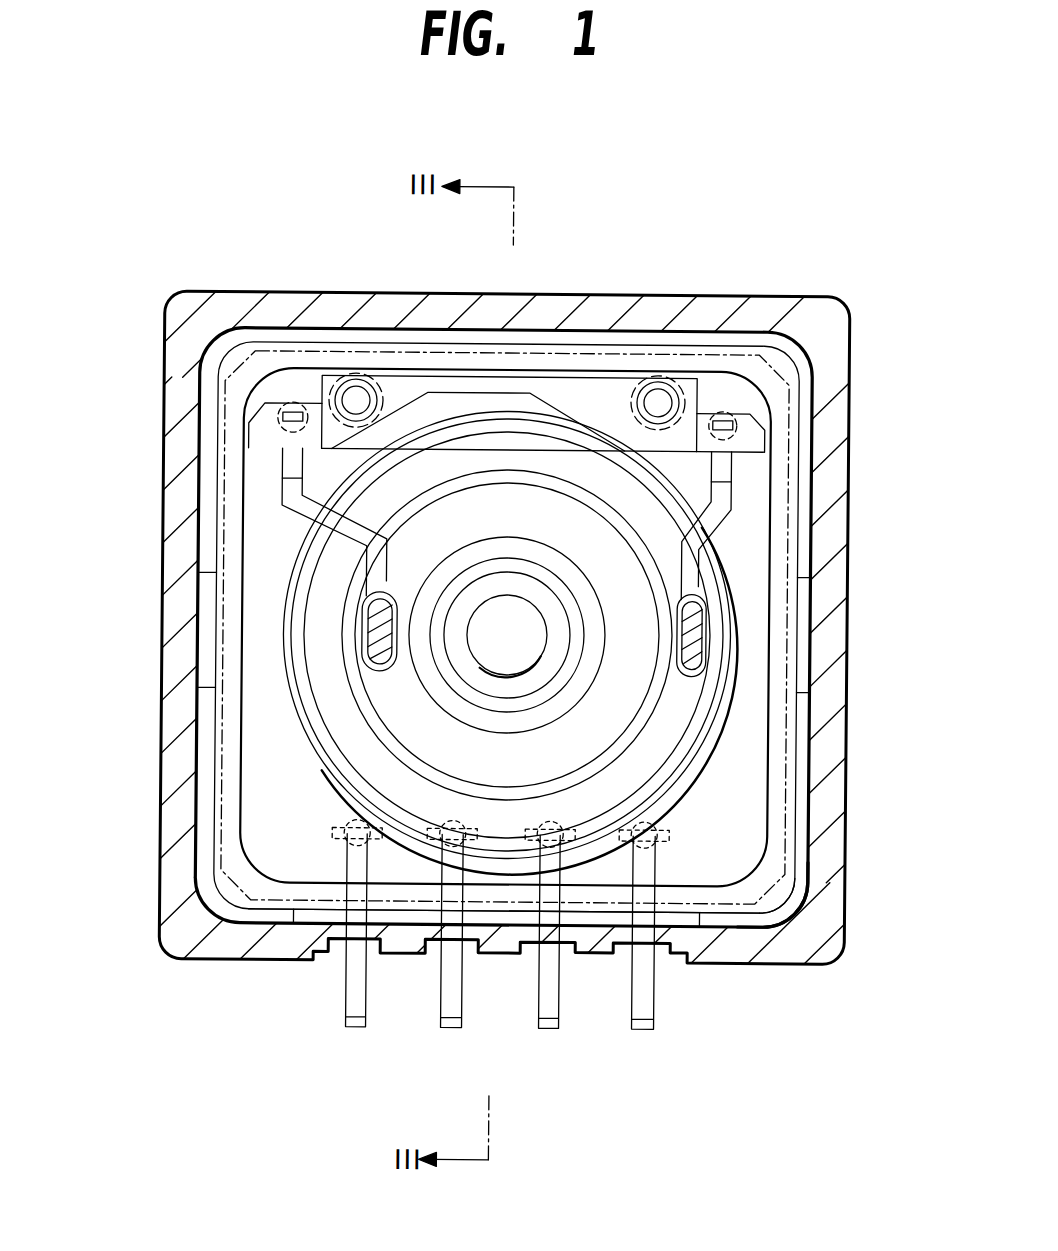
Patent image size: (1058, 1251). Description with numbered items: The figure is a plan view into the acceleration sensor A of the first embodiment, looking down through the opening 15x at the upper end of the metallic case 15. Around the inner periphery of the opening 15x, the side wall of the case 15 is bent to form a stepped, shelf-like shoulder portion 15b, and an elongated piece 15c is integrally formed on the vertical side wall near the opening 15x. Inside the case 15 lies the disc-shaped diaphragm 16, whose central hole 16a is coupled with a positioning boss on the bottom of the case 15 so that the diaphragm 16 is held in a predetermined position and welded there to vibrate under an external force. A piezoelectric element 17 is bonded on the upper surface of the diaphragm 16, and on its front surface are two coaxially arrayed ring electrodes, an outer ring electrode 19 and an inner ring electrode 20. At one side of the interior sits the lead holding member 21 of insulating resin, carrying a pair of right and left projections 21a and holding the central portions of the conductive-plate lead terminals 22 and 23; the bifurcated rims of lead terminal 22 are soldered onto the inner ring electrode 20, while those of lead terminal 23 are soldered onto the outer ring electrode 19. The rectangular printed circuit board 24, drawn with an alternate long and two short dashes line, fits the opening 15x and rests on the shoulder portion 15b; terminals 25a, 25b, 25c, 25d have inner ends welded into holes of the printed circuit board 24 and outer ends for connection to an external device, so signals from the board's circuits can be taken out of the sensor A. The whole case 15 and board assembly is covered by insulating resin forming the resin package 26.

The acceleration sensor A is at (170, 278).
The metallic case 15 is at (806, 437).
The shoulder portion 15b is at (744, 897).
The elongated piece 15c is at (198, 656).
The opening 15x is at (804, 898).
The diaphragm 16 is at (338, 722).
The hole 16a is at (497, 665).
The piezoelectric element 17 is at (350, 573).
The outer ring electrode 19 is at (345, 770).
The inner ring electrode 20 is at (526, 505).
The lead holding member 21 is at (430, 392).
The projection 21a is at (352, 378).
The lead terminal 22 is at (287, 465).
The lead terminal 23 is at (723, 525).
The printed circuit board 24 is at (782, 906).
The terminal 25a is at (357, 1030).
The terminal 25b is at (453, 1030).
The terminal 25c is at (551, 1030).
The terminal 25d is at (645, 1030).
The resin package 26 is at (835, 905).